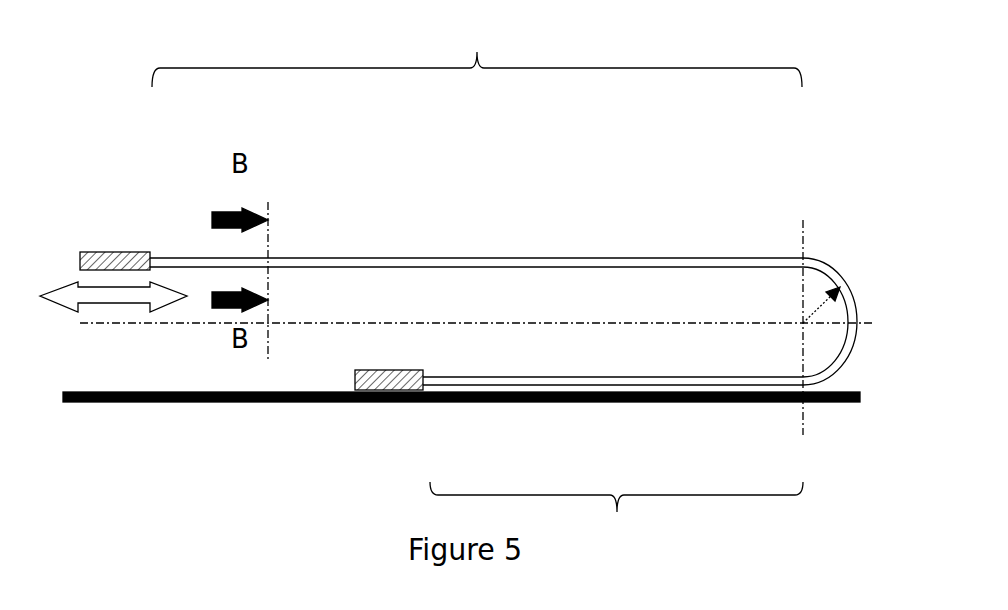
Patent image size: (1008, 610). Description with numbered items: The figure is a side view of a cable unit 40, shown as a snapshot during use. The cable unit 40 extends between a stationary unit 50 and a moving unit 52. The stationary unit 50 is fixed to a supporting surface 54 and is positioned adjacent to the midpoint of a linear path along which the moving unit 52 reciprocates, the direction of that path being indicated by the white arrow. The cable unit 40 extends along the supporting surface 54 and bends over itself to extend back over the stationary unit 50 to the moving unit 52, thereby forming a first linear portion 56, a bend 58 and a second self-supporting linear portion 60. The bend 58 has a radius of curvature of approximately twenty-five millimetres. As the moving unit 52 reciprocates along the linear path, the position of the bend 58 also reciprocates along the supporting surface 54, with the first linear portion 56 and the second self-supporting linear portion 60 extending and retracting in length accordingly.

The cable unit 40 is at (507, 260).
The stationary unit 50 is at (387, 402).
The moving unit 52 is at (115, 252).
The supporting surface 54 is at (167, 402).
The first linear portion 56 is at (616, 520).
The bend 58 is at (843, 278).
The second self-supporting linear portion 60 is at (477, 50).